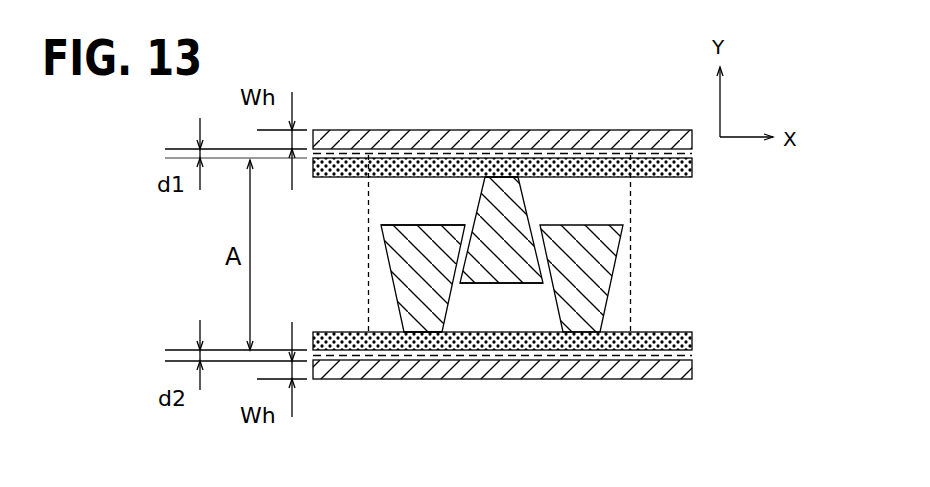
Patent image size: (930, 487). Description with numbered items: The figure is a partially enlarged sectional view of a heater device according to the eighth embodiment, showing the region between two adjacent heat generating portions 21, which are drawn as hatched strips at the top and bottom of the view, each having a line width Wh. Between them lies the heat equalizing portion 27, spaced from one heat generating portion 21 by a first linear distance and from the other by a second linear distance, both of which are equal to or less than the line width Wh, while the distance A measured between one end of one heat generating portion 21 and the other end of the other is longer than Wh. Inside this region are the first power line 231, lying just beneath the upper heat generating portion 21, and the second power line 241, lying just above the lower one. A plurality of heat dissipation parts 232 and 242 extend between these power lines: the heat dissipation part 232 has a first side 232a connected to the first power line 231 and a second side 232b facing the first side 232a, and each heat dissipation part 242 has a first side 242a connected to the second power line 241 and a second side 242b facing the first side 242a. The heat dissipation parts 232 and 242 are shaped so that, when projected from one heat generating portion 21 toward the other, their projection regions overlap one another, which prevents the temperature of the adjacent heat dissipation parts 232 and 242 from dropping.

The heat generating portion 21 is at (478, 130).
The heat equalizing portion 27 is at (553, 150).
The first power line 231 is at (670, 177).
The heat dissipation part 232 is at (503, 180).
The first side 232a is at (500, 178).
The second side 232b is at (487, 283).
The second power line 241 is at (652, 332).
The heat dissipation part 242 is at (597, 258).
The first side 242a is at (430, 332).
The second side 242b is at (427, 225).